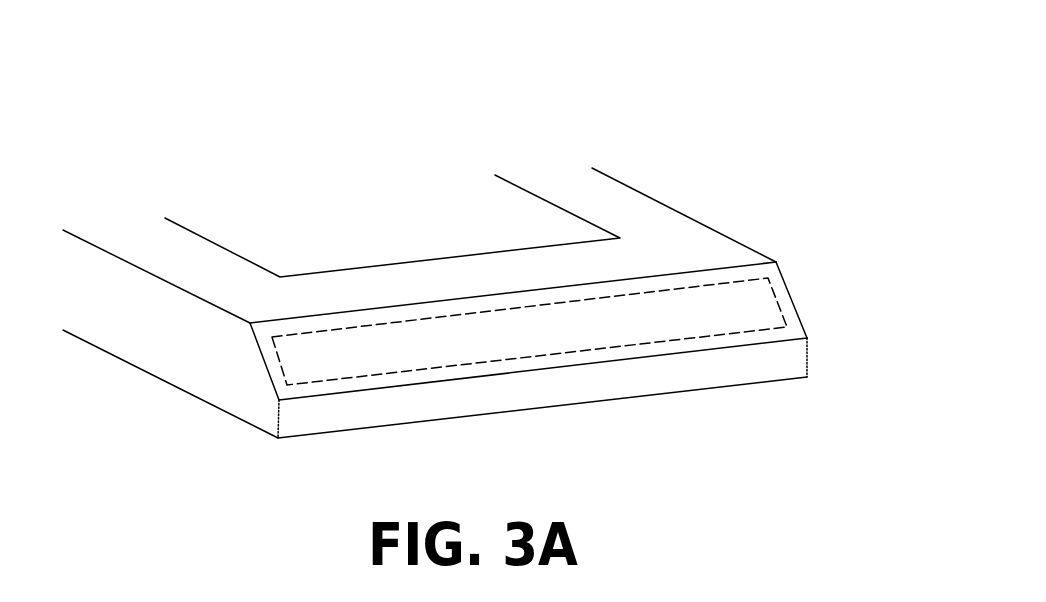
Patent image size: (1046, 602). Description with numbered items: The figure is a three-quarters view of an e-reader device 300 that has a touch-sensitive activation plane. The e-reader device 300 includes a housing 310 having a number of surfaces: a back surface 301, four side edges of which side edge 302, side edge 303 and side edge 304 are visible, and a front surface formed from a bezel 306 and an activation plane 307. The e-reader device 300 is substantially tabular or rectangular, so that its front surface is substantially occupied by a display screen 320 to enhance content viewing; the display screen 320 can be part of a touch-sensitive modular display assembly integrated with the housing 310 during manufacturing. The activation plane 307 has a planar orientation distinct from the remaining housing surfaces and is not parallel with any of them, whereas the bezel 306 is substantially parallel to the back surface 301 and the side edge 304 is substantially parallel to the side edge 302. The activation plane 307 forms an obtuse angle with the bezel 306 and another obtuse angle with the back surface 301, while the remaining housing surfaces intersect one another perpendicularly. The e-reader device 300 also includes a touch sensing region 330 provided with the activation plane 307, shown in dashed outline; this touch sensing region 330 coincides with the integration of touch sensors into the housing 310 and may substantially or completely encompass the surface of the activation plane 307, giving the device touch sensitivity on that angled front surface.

The e-reader device 300 is at (628, 83).
The back surface 301 is at (325, 458).
The side edge 302 is at (787, 249).
The side edge 303 is at (583, 387).
The side edge 304 is at (180, 363).
The bezel 306 is at (670, 228).
The activation plane 307 is at (795, 312).
The housing 310 is at (121, 207).
The display screen 320 is at (392, 226).
The touch sensing region 330 is at (529, 331).